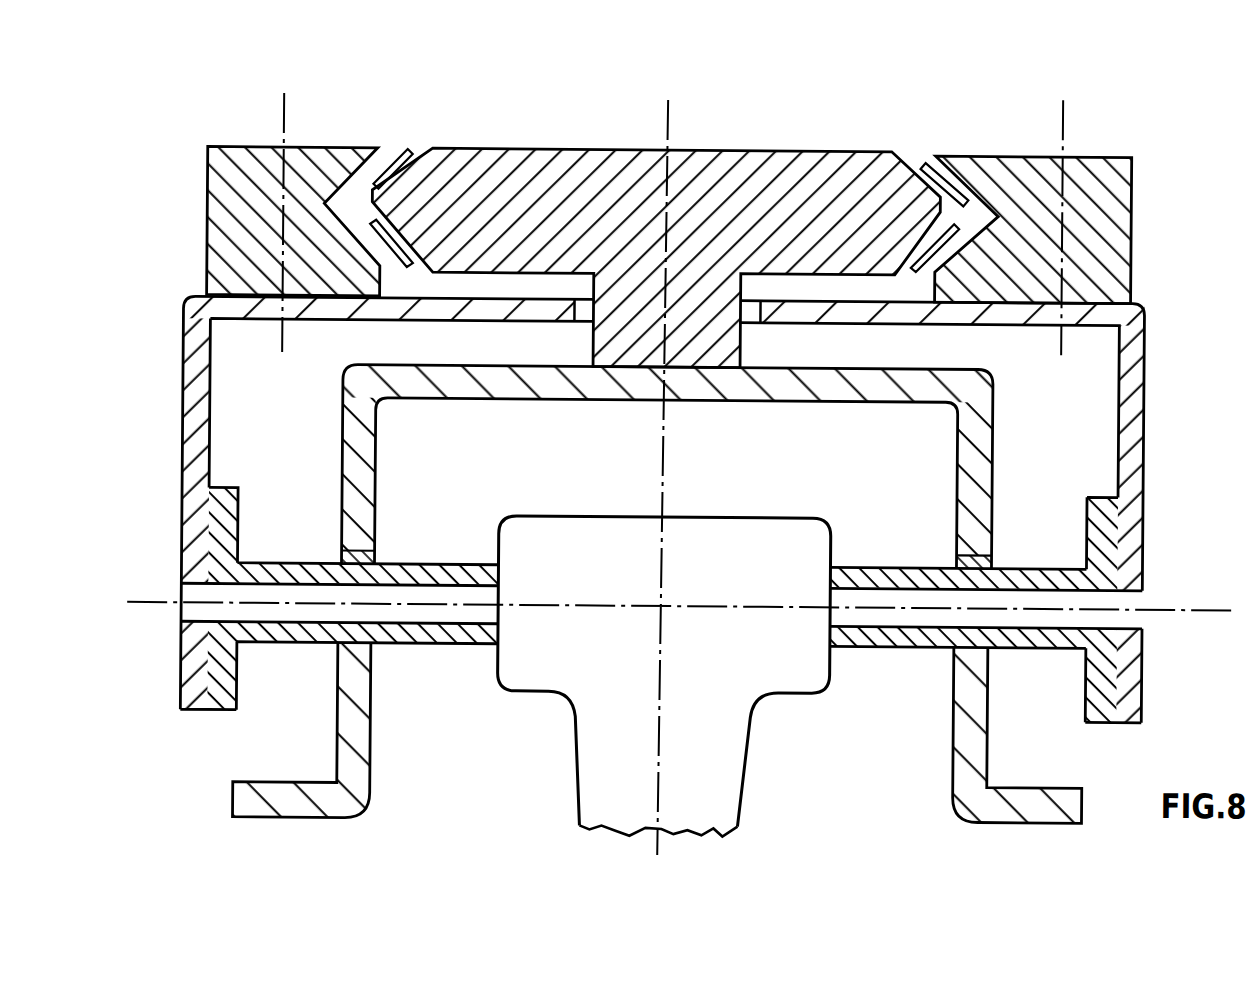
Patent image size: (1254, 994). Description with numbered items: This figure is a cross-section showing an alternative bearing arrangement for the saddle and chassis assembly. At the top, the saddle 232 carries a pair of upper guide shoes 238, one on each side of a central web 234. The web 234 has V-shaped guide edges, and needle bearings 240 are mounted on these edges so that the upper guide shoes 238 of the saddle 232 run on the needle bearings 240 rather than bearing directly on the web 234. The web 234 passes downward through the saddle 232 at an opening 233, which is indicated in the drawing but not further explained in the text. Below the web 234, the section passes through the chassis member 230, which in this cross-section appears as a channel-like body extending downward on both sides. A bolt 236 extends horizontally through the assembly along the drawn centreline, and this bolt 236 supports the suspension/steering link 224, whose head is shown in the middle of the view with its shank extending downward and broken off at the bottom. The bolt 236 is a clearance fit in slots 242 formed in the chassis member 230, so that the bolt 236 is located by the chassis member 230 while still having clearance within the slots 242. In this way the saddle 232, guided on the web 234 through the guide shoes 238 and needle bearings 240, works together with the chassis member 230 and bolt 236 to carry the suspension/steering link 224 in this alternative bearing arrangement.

The suspension/steering link 224 is at (729, 748).
The chassis member 230 is at (368, 445).
The saddle 232 is at (1134, 349).
The bore 233 is at (751, 313).
The web 234 is at (814, 176).
The bolt 236 is at (1100, 602).
The upper guide shoes 238 is at (227, 150).
The needle bearings 240 is at (395, 160).
The slots 242 is at (355, 550).